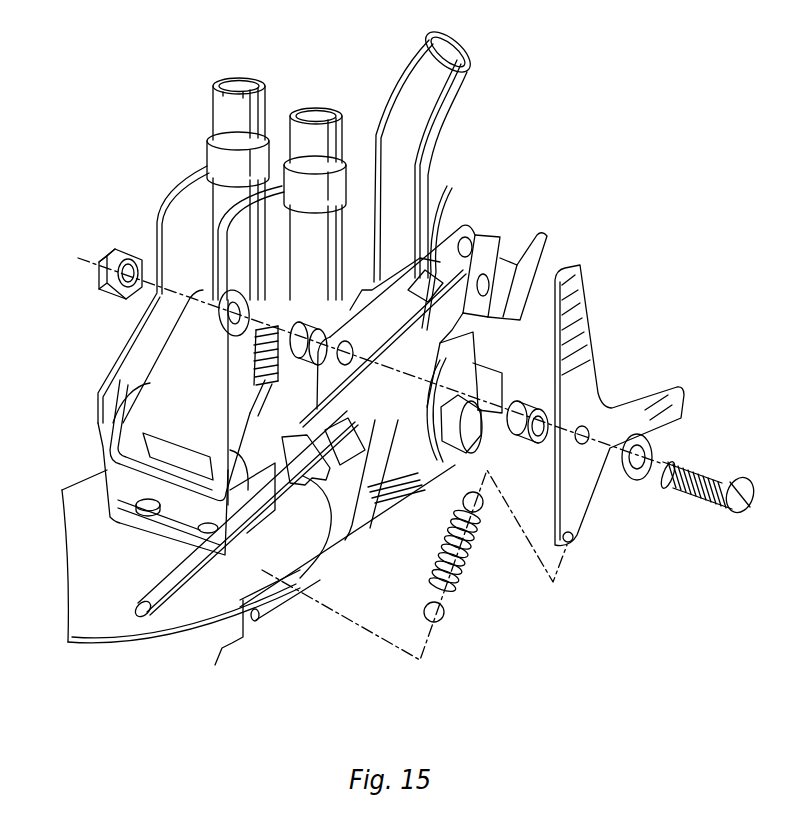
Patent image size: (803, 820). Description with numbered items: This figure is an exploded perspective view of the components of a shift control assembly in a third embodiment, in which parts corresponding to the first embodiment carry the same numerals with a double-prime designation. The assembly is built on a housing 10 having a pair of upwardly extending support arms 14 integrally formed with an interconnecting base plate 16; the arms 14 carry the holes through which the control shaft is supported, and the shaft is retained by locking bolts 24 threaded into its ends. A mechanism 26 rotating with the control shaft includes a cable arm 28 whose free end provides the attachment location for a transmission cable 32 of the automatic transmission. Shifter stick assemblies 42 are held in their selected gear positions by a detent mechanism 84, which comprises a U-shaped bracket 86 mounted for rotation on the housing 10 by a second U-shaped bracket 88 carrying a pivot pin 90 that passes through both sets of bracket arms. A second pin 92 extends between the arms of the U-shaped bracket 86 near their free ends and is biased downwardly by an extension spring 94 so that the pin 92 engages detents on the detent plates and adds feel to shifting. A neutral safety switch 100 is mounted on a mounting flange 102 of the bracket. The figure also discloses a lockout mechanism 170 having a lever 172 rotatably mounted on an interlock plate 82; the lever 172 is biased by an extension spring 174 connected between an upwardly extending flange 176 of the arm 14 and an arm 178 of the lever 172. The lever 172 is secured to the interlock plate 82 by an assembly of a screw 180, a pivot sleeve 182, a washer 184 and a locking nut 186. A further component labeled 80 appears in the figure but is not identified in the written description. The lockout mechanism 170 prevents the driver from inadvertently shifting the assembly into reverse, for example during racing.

The housing 10 is at (273, 613).
The support arms 14 is at (407, 463).
The base plate 16 is at (340, 523).
The locking bolts 24 is at (473, 423).
The mechanism 26 is at (508, 242).
The cable arm 28 is at (478, 347).
The transmission cable 32 is at (173, 603).
The shifter stick assemblies 42 is at (207, 88).
The mounting plate 80 is at (453, 228).
The interlock plate 82 is at (190, 178).
The detent mechanism 84 is at (123, 340).
The U-shaped bracket 86 is at (143, 383).
The second U-shaped bracket 88 is at (107, 500).
The pivot pin 90 is at (183, 482).
The second pin 92 is at (290, 322).
The extension spring 94 is at (260, 327).
The safety switch 100 is at (267, 428).
The mounting flange 102 is at (270, 390).
The lockout mechanism 170 is at (613, 523).
The lever 172 is at (600, 370).
The extension spring 174 is at (465, 572).
The upwardly extending flange 176 is at (263, 620).
The arm 178 is at (572, 540).
The screw 180 is at (693, 481).
The pivot sleeve 182 is at (517, 437).
The washer 184 is at (221, 297).
The locking nut 186 is at (132, 252).